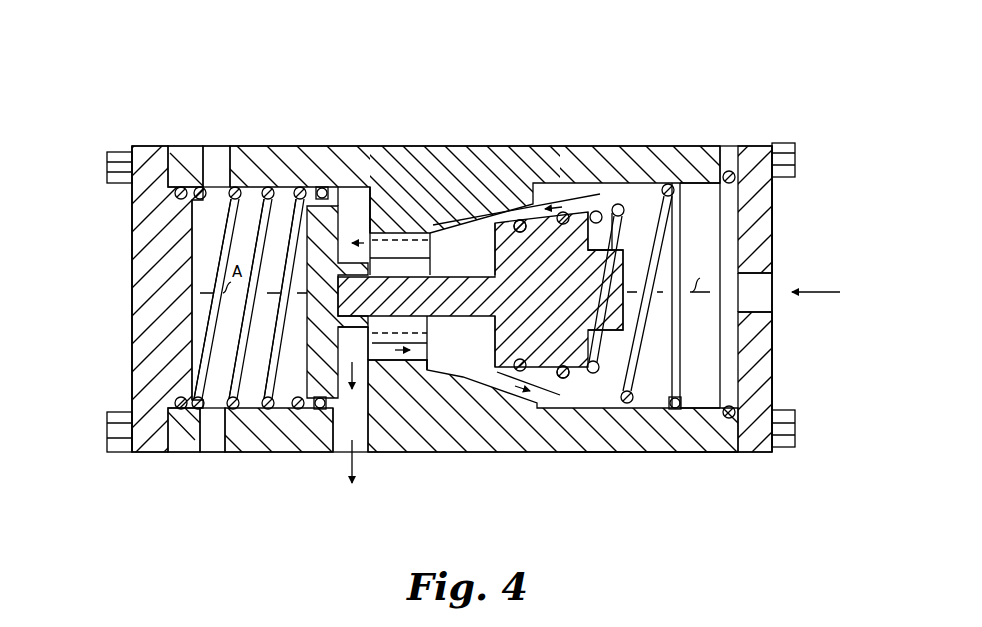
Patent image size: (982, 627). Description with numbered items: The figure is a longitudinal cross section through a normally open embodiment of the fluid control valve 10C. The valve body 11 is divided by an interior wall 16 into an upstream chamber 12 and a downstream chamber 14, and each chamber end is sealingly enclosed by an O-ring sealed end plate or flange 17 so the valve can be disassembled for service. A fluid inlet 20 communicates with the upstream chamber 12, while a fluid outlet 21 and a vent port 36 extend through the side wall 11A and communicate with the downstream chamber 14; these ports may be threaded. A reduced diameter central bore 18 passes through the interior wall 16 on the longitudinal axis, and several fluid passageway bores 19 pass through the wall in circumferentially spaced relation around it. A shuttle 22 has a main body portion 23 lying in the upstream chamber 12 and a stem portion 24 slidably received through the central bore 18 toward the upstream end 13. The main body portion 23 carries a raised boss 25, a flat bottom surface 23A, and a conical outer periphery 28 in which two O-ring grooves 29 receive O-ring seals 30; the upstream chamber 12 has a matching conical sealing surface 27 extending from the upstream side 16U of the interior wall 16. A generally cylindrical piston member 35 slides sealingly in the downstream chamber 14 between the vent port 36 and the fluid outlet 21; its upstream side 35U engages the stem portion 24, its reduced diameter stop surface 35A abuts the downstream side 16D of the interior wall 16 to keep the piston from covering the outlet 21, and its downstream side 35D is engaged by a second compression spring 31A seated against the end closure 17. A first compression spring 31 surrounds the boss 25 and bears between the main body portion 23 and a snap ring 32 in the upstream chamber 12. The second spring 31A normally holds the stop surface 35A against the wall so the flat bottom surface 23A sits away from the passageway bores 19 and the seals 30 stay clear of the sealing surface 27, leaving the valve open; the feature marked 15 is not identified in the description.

The fluid control valve 10C is at (640, 121).
The valve body 11 is at (620, 452).
The side wall 11A is at (654, 452).
The upstream chamber 12 is at (714, 352).
The upstream end 13 is at (780, 222).
The downstream chamber 14 is at (216, 238).
The outlet end 15 is at (112, 275).
The interior wall 16 is at (358, 222).
The downstream side of the interior wall 16D is at (350, 187).
The upstream side of the interior wall 16U is at (436, 425).
The end plate or flange 17 is at (132, 352).
The central bore 18 is at (428, 228).
The fluid passageway bores 19 is at (392, 233).
The fluid inlet 20 is at (766, 287).
The fluid outlet 21 is at (332, 445).
The shuttle 22 is at (630, 254).
The main body portion 23 is at (566, 314).
The flat bottom surface 23A is at (490, 352).
The stem portion 24 is at (470, 286).
The raised boss 25 is at (627, 320).
The conical sealing surface 27 is at (488, 213).
The conical outer periphery 28 is at (540, 380).
The O-ring groove 29 is at (490, 385).
The O-ring seals 30 is at (541, 299).
The first compression spring 31 is at (618, 204).
The second compression spring 31A is at (258, 147).
The snap ring 32 is at (700, 172).
The piston member 35 is at (312, 372).
The upstream side of the piston 35U is at (345, 226).
The stop surface 35A is at (348, 328).
The downstream side of the piston 35D is at (338, 362).
The vent port 36 is at (218, 157).